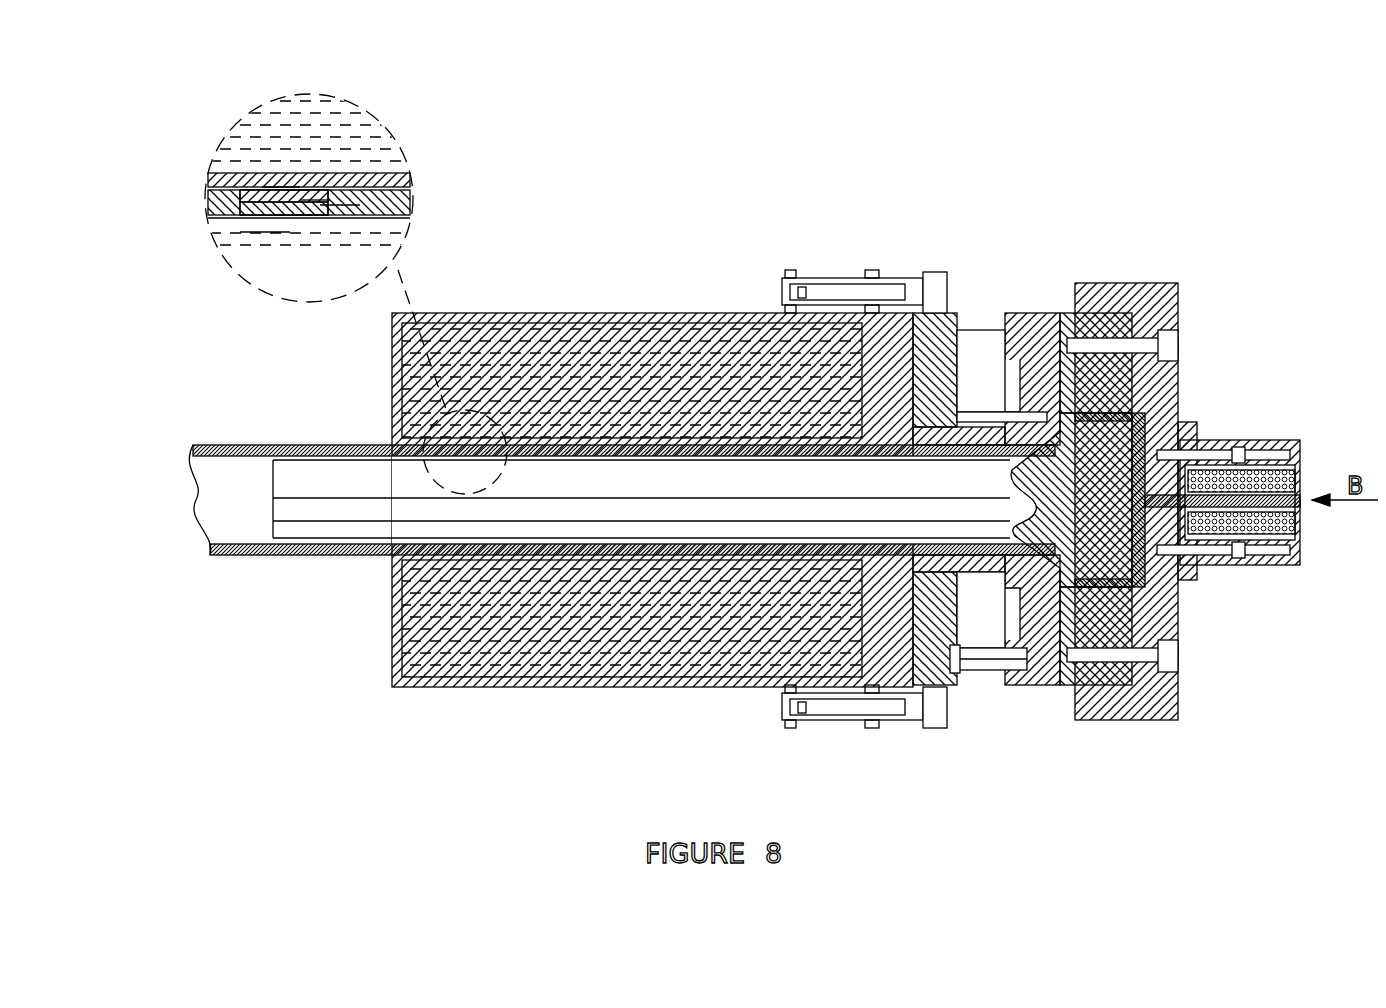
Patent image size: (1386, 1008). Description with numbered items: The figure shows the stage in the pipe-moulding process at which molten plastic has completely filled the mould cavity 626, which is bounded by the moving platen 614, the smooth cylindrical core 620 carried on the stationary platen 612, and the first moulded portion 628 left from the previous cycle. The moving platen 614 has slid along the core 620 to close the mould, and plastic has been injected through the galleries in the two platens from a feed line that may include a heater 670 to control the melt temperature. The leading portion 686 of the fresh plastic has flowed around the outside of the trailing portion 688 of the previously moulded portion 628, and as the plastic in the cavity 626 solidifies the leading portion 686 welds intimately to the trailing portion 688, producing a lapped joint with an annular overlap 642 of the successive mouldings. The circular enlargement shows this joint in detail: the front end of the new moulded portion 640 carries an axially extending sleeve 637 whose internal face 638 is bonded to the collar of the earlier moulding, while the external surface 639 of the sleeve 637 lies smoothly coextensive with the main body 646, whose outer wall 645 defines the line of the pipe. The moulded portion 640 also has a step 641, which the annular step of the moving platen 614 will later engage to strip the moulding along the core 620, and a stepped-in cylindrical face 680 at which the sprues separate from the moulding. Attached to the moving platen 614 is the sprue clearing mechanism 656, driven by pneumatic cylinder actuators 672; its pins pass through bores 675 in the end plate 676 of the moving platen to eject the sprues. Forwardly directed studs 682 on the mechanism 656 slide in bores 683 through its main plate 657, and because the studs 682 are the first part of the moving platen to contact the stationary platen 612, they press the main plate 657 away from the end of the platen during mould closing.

The stationary platen 612 is at (1160, 283).
The moving platen 614 is at (615, 312).
The core 620 is at (745, 456).
The mould cavity 626 is at (820, 456).
The first moulded portion 628 is at (265, 556).
The axially extending sleeve 637 is at (293, 190).
The internal face 638 is at (302, 216).
The external surface 639 is at (345, 195).
The moulded portion 640 is at (415, 205).
The step 641 is at (255, 230).
The annular overlap 642 is at (245, 178).
The outer wall 645 is at (325, 445).
The main body 646 is at (570, 456).
The sprue clearing mechanism 656 is at (950, 312).
The main plate 657 is at (965, 686).
The heater 670 is at (1300, 520).
The pneumatic cylinder actuators 672 is at (840, 270).
The bores 675 is at (1040, 410).
The end plate 676 is at (1000, 380).
The stepped-in cylindrical face 680 is at (318, 195).
The studs 682 is at (985, 672).
The bores 683 is at (981, 610).
The leading portion 686 is at (280, 188).
The trailing portion 688 is at (292, 216).